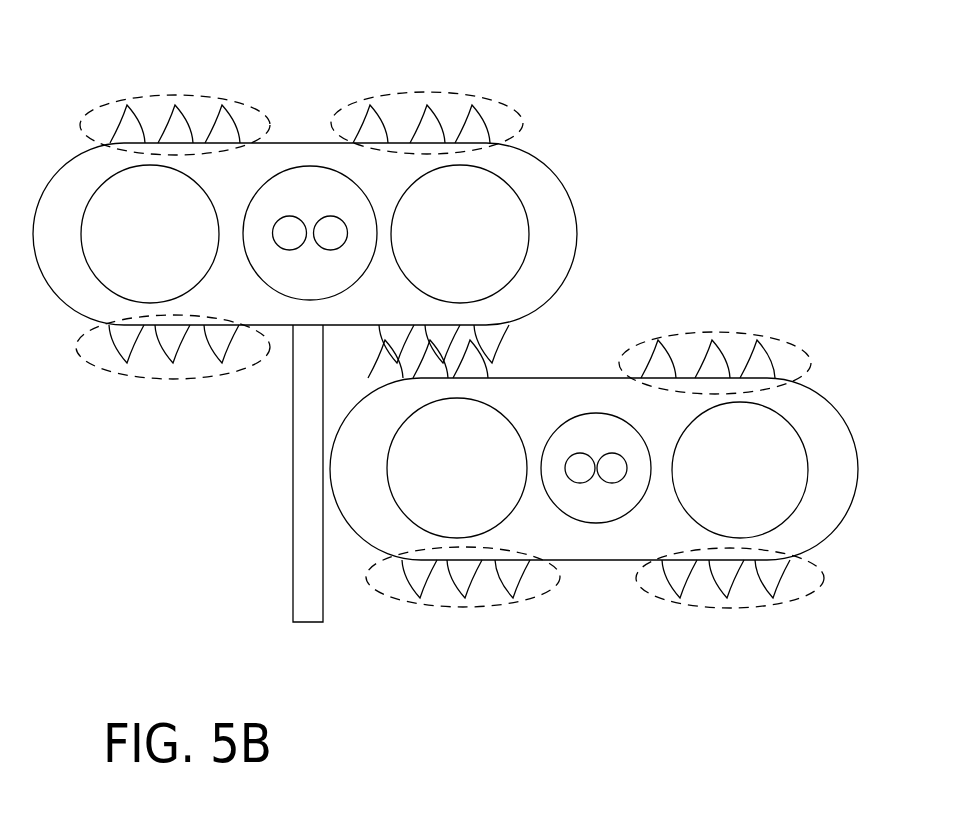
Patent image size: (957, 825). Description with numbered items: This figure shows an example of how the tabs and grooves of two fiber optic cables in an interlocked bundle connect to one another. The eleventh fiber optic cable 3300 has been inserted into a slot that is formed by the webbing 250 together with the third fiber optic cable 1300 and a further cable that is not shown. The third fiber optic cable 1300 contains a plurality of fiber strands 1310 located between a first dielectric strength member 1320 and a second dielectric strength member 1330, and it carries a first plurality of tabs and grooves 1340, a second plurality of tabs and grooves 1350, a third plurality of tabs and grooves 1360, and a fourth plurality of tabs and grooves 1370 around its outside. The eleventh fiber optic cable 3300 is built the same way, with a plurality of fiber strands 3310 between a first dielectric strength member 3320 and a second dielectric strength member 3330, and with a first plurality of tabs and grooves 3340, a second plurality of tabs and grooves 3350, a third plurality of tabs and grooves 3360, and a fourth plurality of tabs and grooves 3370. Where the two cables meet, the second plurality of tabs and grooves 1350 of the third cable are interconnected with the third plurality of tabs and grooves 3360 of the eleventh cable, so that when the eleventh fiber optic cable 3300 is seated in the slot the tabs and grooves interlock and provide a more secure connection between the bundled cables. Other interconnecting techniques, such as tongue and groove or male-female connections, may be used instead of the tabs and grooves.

The webbing 250 is at (293, 560).
The third fiber optic cable 1300 is at (577, 235).
The plurality of fiber strands 1310 is at (307, 233).
The first dielectric strength member 1320 is at (150, 234).
The second dielectric strength member 1330 is at (460, 234).
The first plurality of tabs and grooves 1340 is at (175, 379).
The second plurality of tabs and grooves 1350 is at (450, 343).
The third plurality of tabs and grooves 1360 is at (175, 95).
The fourth plurality of tabs and grooves 1370 is at (427, 93).
The eleventh fiber optic cable 3300 is at (828, 393).
The plurality of fiber strands 3310 is at (596, 470).
The first dielectric strength member 3320 is at (457, 468).
The second dielectric strength member 3330 is at (740, 470).
The first plurality of tabs and grooves 3340 is at (463, 607).
The second plurality of tabs and grooves 3350 is at (730, 608).
The third plurality of tabs and grooves 3360 is at (425, 360).
The fourth plurality of tabs and grooves 3370 is at (715, 332).